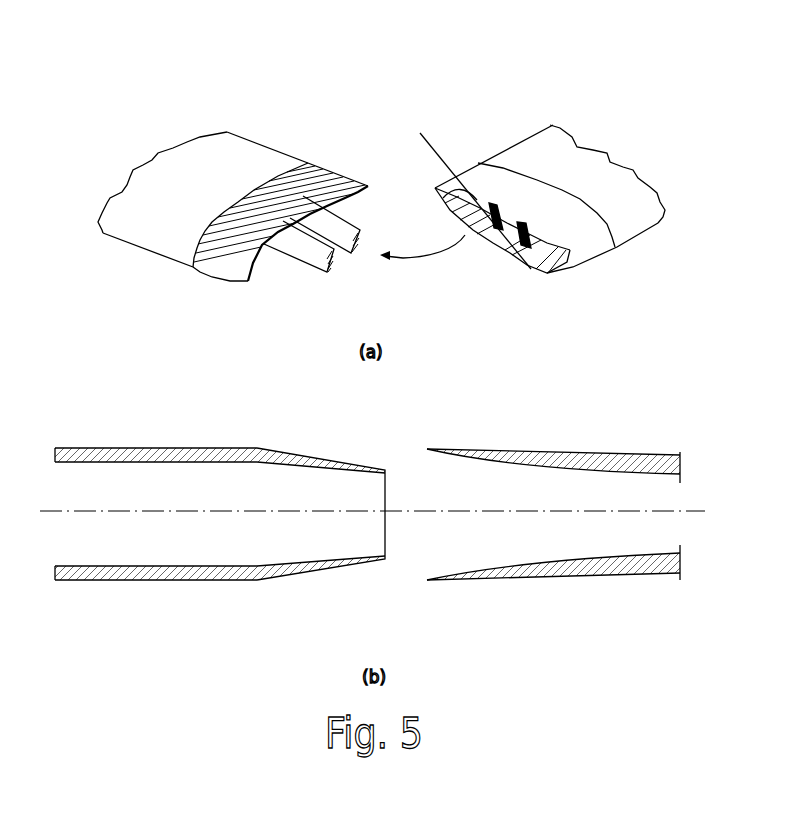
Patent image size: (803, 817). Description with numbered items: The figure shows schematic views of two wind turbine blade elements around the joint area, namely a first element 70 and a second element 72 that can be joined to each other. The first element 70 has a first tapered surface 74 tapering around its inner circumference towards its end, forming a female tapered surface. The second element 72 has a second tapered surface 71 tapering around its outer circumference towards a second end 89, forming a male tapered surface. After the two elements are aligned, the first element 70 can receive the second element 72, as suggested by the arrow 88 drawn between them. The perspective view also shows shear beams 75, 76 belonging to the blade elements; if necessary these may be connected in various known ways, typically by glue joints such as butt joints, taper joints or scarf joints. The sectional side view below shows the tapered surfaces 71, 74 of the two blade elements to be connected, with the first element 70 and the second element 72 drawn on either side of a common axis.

The first element 70 is at (512, 125).
The second tapered surface 71 is at (307, 160).
The second element 72 is at (233, 98).
The first tapered surface 74 is at (482, 645).
The shear beam 75 is at (308, 262).
The shear beam 76 is at (520, 264).
The insertion direction arrow 88 is at (467, 257).
The second end 89 is at (340, 258).